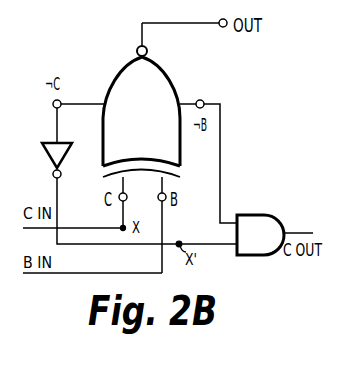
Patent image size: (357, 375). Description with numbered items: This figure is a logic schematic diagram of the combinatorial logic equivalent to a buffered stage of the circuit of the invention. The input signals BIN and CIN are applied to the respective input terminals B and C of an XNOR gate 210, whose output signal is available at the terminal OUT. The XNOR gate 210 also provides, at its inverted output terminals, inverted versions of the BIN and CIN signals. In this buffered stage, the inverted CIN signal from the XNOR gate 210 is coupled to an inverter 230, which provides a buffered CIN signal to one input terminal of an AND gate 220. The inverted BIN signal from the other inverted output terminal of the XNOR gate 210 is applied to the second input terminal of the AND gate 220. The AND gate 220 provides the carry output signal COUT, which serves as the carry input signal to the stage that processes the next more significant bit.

The XNOR gate 210 is at (176, 62).
The AND gate 220 is at (273, 214).
The inverter 230 is at (48, 141).